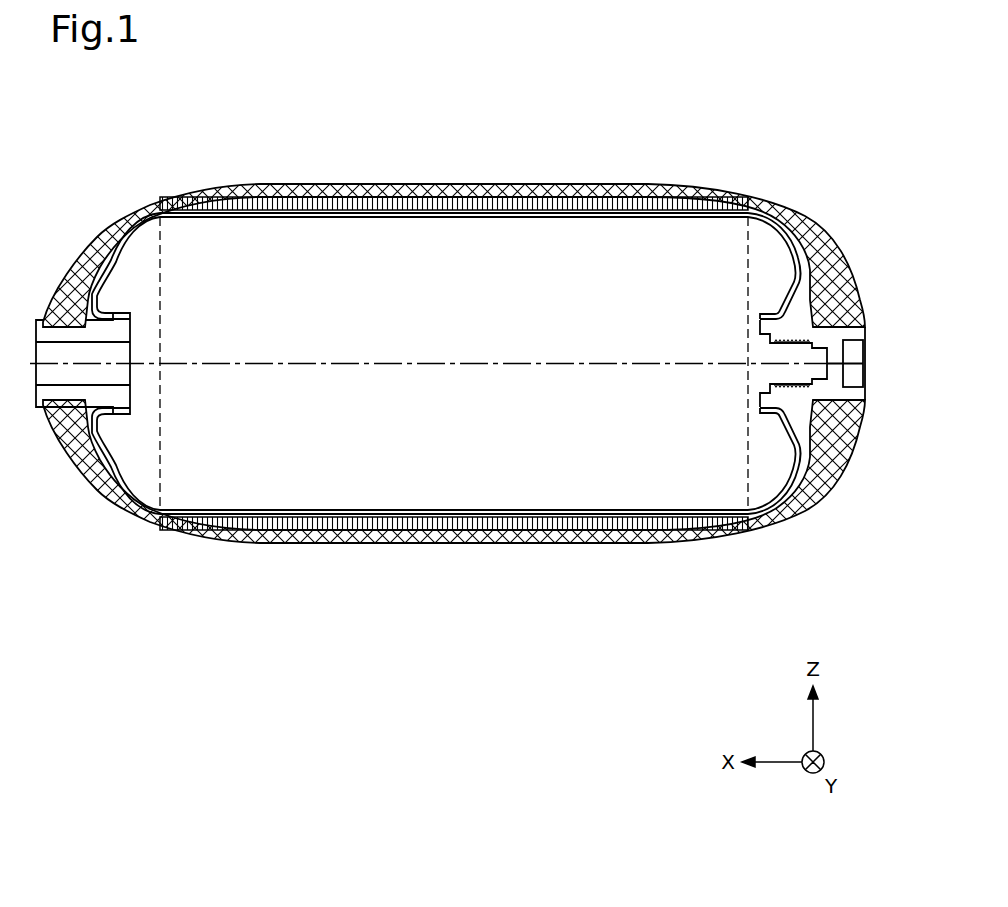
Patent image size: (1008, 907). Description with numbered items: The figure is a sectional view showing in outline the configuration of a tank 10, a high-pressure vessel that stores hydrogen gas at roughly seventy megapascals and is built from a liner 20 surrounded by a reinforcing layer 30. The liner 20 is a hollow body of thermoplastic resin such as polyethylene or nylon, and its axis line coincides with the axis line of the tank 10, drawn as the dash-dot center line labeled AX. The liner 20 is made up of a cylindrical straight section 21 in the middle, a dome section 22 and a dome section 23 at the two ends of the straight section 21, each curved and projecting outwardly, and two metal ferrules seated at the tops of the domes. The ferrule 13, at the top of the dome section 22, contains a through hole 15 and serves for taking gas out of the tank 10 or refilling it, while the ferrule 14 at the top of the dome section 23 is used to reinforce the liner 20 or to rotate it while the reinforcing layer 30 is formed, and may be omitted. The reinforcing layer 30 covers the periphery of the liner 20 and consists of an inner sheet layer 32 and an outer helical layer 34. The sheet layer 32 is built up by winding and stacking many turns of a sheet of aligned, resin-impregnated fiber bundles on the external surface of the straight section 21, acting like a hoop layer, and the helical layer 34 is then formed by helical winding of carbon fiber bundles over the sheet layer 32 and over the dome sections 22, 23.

The tank 10 is at (784, 120).
The ferrule 13 is at (62, 393).
The ferrule 14 is at (833, 392).
The through hole 15 is at (70, 352).
The liner 20 is at (548, 217).
The straight section 21 is at (162, 548).
The dome section 22 is at (133, 532).
The dome section 23 is at (777, 532).
The reinforcing layer 30 is at (470, 128).
The sheet layer 32 is at (458, 200).
The helical layer 34 is at (399, 190).